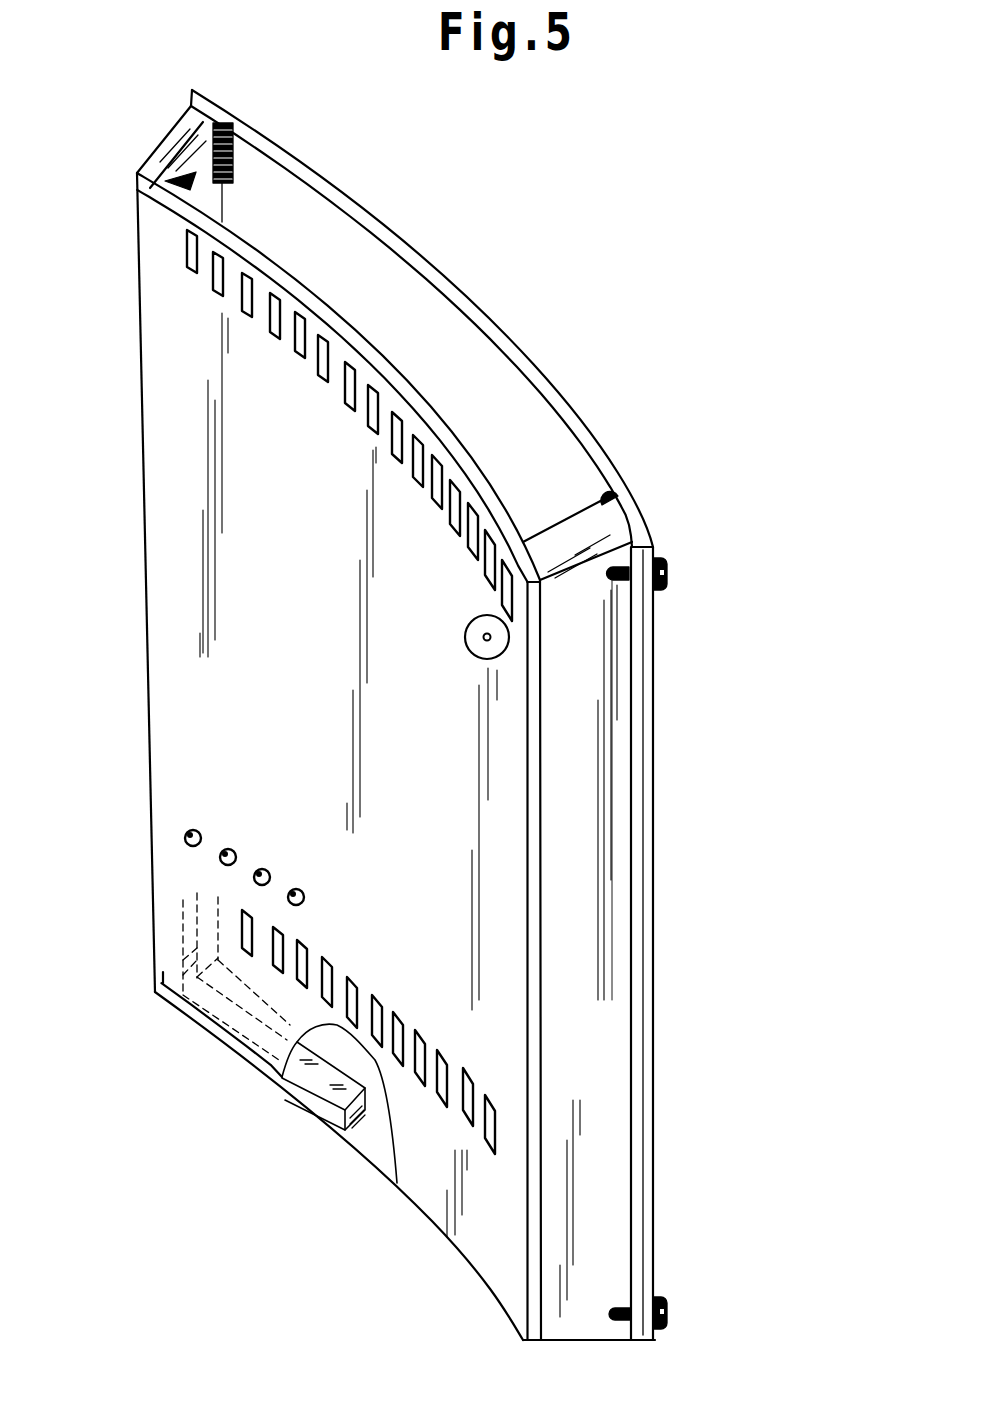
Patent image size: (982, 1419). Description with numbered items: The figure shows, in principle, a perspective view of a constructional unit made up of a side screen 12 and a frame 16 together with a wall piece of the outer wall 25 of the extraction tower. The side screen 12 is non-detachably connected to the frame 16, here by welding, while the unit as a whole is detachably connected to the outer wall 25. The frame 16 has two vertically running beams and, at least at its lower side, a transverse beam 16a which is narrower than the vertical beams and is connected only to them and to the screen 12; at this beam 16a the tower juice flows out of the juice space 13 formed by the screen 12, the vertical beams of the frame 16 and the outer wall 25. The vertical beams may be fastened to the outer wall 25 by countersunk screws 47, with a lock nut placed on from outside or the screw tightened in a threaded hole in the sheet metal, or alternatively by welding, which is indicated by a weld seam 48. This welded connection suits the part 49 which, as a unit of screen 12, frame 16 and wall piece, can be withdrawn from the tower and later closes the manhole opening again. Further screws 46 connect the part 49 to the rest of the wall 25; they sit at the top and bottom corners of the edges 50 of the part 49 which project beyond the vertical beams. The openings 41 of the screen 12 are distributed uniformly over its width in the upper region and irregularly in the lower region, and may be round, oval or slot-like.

The side screen 12 is at (203, 217).
The juice space 13 is at (362, 278).
The frame 16 is at (187, 140).
The transverse beam 16a is at (325, 1098).
The outer wall 25 is at (547, 390).
The openings 41 is at (243, 290).
The screws 46 is at (667, 573).
The countersunk screws 47 is at (493, 647).
The weld seam 48 is at (230, 147).
The part of the outer wall 49 is at (598, 252).
The edges 50 is at (652, 820).